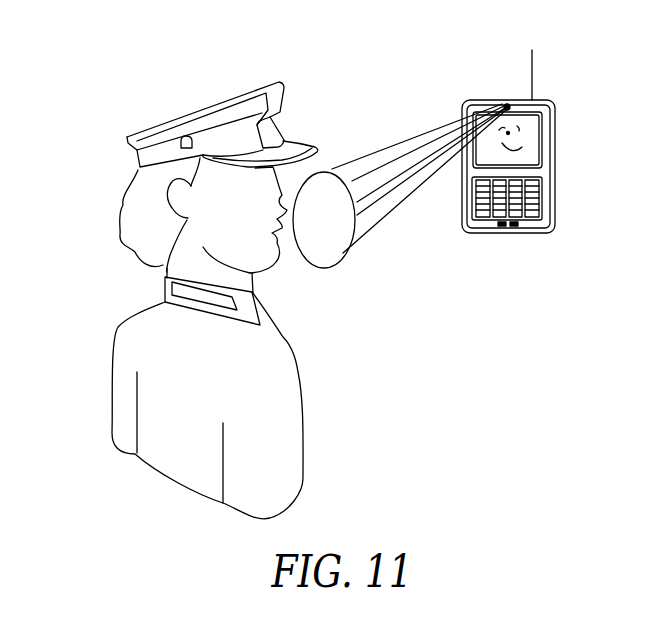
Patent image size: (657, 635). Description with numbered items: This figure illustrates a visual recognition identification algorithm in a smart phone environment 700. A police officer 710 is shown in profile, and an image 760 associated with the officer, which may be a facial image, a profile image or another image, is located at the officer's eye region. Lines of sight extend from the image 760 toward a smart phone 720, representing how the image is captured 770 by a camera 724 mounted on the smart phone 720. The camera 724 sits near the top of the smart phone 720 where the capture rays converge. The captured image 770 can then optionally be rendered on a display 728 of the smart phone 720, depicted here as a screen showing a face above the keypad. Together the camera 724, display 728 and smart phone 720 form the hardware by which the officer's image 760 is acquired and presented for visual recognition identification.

The system / environment 700 is at (355, 43).
The police officer 710 is at (104, 286).
The smart phone 720 is at (553, 149).
The camera 724 is at (505, 106).
The display 728 is at (528, 133).
The image 760 is at (302, 172).
The captured image 770 is at (362, 225).